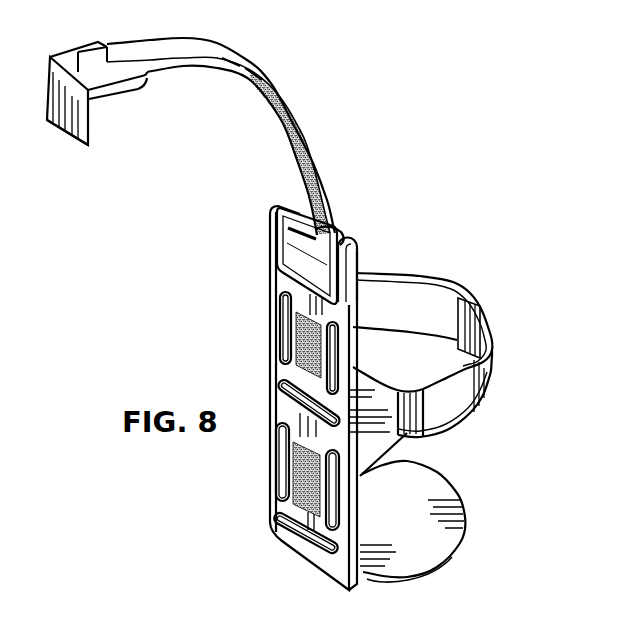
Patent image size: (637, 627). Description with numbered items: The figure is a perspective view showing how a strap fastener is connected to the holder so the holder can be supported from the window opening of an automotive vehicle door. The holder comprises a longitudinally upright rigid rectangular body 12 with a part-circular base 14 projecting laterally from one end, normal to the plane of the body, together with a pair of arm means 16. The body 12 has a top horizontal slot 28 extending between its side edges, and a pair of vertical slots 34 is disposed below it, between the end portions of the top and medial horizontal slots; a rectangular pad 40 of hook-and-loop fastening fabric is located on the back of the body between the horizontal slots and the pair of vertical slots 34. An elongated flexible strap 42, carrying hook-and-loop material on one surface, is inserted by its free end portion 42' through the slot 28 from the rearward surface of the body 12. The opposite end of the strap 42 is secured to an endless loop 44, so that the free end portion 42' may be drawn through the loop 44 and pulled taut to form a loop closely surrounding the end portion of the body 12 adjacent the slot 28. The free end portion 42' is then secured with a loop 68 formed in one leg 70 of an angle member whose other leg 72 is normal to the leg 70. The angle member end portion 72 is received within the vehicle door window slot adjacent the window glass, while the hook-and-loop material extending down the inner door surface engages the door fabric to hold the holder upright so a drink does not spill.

The body 12 is at (270, 280).
The base 14 is at (426, 479).
The arm means 16 is at (400, 273).
The horizontal slot 28 is at (343, 312).
The vertical slots 34 is at (283, 328).
The pad 40 is at (302, 367).
The strap 42 is at (245, 136).
The free end portion of the strap 42' is at (110, 40).
The endless loop 44 is at (357, 217).
The loop 68 is at (103, 50).
The leg of the angle member 70 is at (122, 90).
The angle member end portion 72 is at (95, 135).